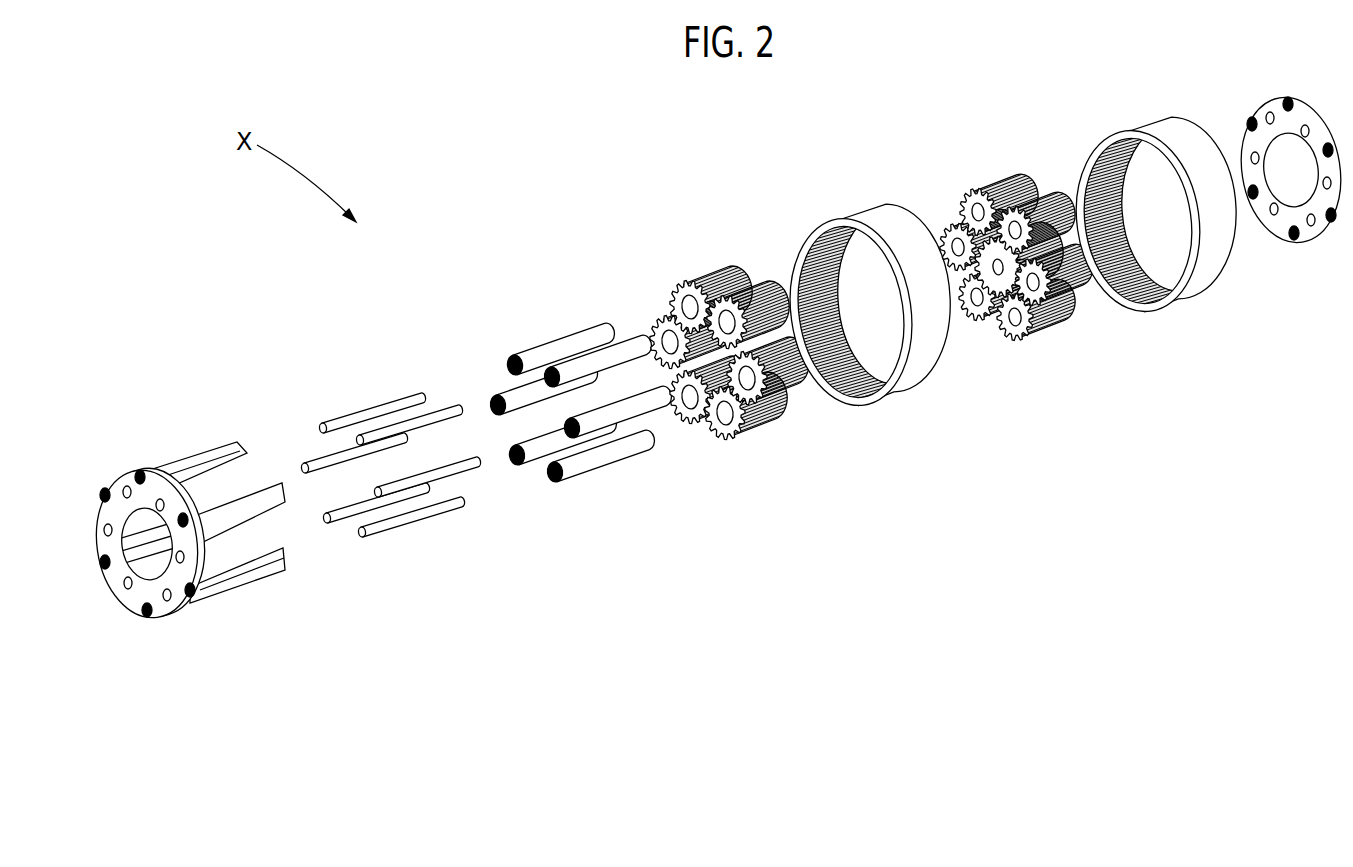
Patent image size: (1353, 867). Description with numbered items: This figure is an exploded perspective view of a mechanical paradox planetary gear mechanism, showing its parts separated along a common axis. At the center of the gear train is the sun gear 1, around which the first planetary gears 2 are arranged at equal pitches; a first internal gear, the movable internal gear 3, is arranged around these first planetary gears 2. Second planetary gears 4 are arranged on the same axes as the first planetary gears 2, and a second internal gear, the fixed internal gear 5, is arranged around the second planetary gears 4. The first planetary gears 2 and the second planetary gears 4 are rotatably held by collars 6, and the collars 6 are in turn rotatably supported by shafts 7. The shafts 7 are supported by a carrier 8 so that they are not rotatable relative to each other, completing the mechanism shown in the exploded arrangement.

The sun gear 1 is at (982, 325).
The first planetary gears 2 is at (1016, 268).
The movable internal gear 3 is at (1203, 283).
The second planetary gears 4 is at (690, 288).
The fixed internal gear 5 is at (915, 402).
The collars 6 is at (535, 348).
The shafts 7 is at (325, 422).
The carrier 8 is at (130, 600).